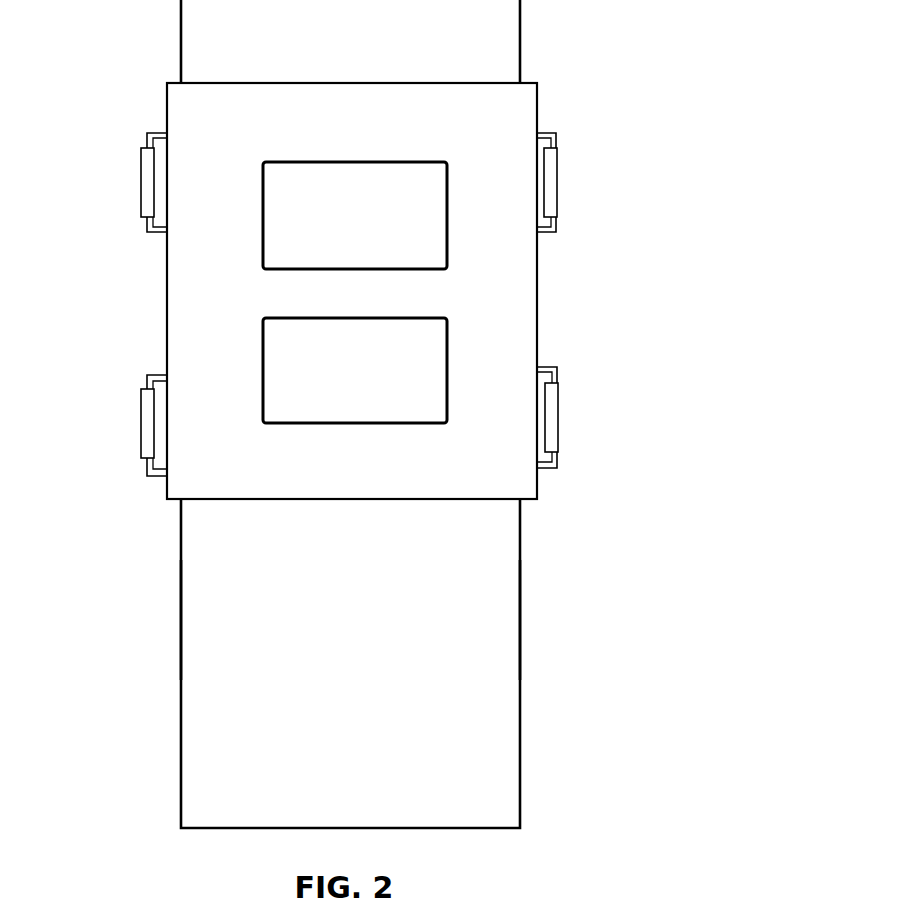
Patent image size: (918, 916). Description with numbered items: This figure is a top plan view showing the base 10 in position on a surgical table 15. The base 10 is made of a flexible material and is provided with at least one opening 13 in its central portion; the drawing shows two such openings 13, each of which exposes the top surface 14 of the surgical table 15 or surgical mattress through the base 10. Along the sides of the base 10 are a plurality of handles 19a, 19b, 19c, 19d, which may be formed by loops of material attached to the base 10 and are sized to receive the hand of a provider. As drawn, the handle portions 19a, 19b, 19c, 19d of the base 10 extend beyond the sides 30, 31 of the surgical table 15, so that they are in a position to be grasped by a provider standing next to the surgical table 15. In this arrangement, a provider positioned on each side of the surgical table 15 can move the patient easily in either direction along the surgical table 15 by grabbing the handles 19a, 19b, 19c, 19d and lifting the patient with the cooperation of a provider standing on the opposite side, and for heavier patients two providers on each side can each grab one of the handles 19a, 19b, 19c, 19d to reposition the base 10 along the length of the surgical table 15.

The base 10 is at (466, 287).
The opening 13 is at (305, 223).
The top surface 14 is at (342, 623).
The surgical table 15 is at (603, 660).
The handle 19a is at (552, 181).
The handle 19b is at (552, 418).
The handle 19c is at (147, 182).
The handle 19d is at (148, 428).
The side of the surgical table 30 is at (181, 619).
The side of the surgical table 31 is at (521, 618).